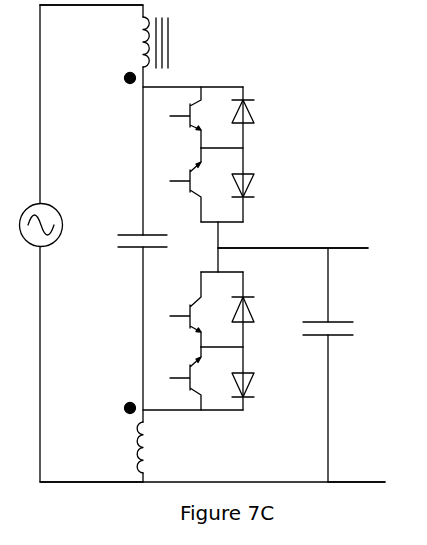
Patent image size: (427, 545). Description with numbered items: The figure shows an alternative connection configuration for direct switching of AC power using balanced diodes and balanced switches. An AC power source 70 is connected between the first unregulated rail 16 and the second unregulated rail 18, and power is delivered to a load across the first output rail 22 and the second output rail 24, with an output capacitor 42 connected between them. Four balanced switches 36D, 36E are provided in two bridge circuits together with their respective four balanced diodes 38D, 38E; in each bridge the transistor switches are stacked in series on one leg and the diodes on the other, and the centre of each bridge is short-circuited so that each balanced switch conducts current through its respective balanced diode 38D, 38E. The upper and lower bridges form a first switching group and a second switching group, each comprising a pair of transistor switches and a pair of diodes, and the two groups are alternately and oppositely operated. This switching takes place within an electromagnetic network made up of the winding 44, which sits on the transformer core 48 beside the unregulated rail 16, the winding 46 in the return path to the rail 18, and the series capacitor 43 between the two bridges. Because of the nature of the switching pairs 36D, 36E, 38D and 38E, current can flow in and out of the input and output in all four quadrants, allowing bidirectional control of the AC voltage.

The first unregulated rail 16 is at (93, 6).
The second unregulated rail 18 is at (102, 481).
The first output rail 22 is at (358, 248).
The second output rail 24 is at (347, 482).
The balanced switch 36D is at (190, 192).
The balanced switch 36E is at (190, 126).
The balanced diode 38D is at (255, 113).
The balanced diode 38E is at (255, 180).
The output capacitor 42 is at (325, 337).
The capacitor 43 is at (143, 234).
The winding 44 is at (145, 42).
The winding 46 is at (148, 431).
The transformer core 48 is at (170, 43).
The AC power source 70 is at (50, 238).